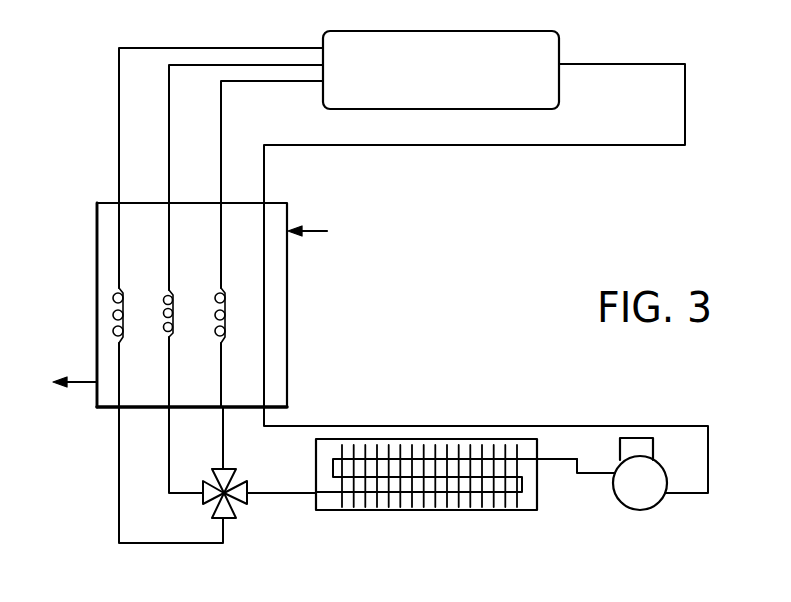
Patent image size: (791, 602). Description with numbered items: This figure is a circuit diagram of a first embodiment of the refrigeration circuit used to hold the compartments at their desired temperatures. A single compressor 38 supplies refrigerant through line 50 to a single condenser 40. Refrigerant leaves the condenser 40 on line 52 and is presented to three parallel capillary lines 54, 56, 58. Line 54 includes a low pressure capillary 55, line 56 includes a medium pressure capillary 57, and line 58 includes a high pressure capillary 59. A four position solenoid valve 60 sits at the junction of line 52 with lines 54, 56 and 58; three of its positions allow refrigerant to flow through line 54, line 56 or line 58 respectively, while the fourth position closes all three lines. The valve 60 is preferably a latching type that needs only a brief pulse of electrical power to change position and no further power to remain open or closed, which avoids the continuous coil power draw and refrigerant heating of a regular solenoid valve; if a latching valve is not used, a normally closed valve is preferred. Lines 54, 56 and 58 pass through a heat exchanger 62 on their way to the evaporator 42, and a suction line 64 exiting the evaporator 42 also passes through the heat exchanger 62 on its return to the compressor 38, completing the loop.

The compressor 38 is at (660, 502).
The condenser 40 is at (432, 512).
The evaporator 42 is at (552, 45).
The line 50 is at (590, 476).
The line 52 is at (290, 497).
The capillary line 54 is at (224, 442).
The low pressure capillary 55 is at (225, 300).
The capillary line 56 is at (169, 439).
The medium pressure capillary 57 is at (176, 323).
The capillary line 58 is at (137, 545).
The high pressure capillary 59 is at (126, 307).
The four position solenoid valve 60 is at (227, 520).
The heat exchanger 62 is at (97, 308).
The suction line 64 is at (566, 148).